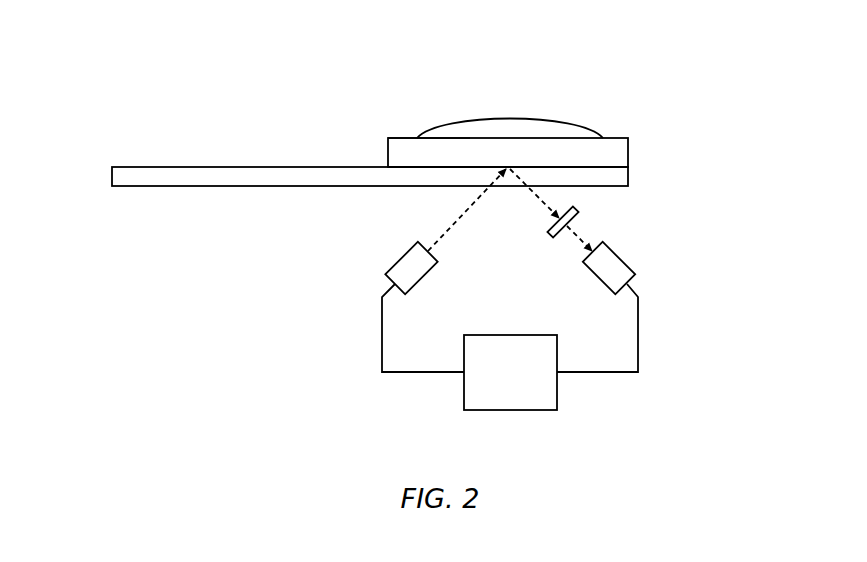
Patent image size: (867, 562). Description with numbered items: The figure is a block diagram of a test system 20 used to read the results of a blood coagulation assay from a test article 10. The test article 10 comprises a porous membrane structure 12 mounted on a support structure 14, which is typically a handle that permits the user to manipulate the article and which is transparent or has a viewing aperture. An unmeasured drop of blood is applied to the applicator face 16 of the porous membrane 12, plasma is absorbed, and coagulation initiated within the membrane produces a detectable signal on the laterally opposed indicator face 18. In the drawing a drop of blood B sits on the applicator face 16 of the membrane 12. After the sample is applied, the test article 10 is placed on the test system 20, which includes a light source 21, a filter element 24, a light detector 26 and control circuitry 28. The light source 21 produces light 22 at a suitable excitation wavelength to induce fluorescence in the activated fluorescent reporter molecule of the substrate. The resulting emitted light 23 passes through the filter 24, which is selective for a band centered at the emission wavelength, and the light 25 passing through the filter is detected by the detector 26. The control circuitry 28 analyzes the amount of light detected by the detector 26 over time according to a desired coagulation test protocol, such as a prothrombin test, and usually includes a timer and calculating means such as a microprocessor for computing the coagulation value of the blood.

The test article 10 is at (303, 118).
The porous membrane structure 12 is at (612, 148).
The support structure 14 is at (228, 166).
The applicator face 16 is at (407, 137).
The indicator face 18 is at (402, 164).
The bump B is at (507, 117).
The test system 20 is at (730, 93).
The light source 21 is at (385, 274).
The light 22 is at (445, 229).
The emitted light 23 is at (538, 200).
The filter element 24 is at (580, 211).
The light passing through the filter 25 is at (578, 242).
The light detector 26 is at (636, 274).
The control circuitry 28 is at (557, 385).